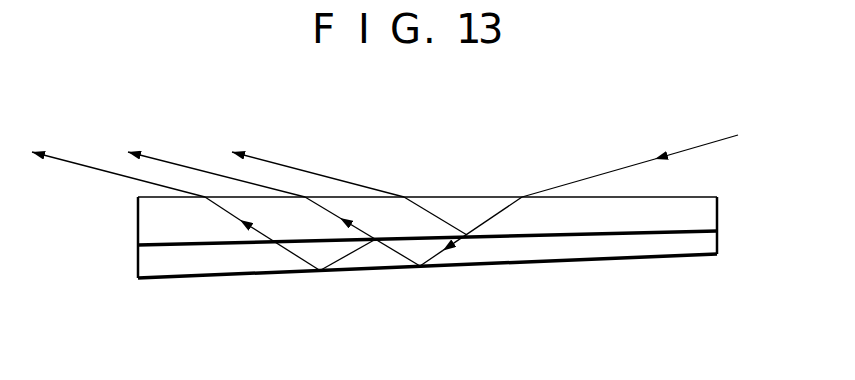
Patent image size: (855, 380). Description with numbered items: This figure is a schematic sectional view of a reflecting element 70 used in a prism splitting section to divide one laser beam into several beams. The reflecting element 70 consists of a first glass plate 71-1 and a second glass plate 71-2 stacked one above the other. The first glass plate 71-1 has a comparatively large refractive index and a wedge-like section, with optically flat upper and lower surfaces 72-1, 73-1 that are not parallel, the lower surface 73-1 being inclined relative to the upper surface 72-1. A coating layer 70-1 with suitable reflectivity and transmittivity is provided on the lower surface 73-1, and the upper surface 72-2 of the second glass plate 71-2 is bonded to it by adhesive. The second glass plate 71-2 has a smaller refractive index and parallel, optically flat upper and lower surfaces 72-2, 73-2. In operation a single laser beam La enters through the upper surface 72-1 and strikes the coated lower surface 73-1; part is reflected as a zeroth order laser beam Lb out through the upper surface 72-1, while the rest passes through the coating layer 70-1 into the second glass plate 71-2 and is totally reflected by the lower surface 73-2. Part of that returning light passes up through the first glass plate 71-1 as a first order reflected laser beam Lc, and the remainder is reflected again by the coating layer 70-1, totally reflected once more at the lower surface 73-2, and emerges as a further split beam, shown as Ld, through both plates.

The reflecting element 70 is at (618, 282).
The coating layer 70-1 is at (493, 237).
The first glass plate 71-1 is at (687, 210).
The second glass plate 71-2 is at (683, 248).
The upper surface of the first glass plate 72-1 is at (450, 197).
The upper surface of the second glass plate 72-2 is at (562, 237).
The lower surface of the first glass plate 73-1 is at (540, 233).
The lower surface of the second glass plate 73-2 is at (295, 273).
The single laser beam La is at (700, 147).
The 0-th order laser beam Lb is at (296, 168).
The 1-st order reflected laser beam Lc is at (179, 163).
The emitted light ray Ld is at (82, 163).